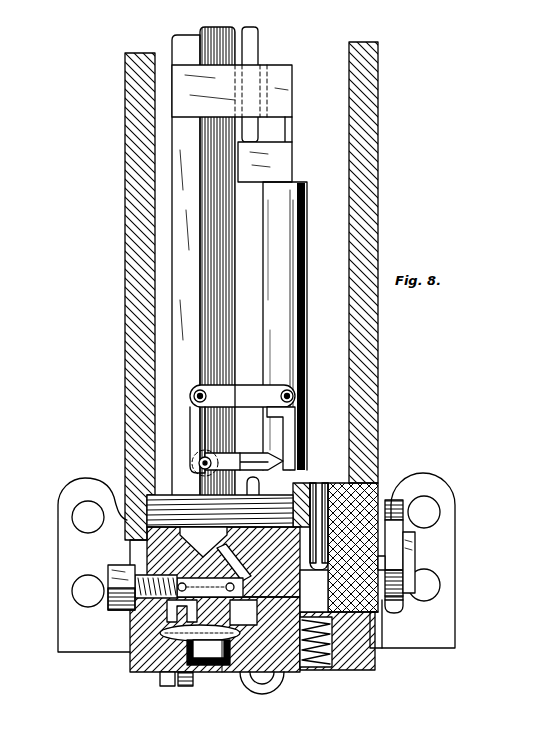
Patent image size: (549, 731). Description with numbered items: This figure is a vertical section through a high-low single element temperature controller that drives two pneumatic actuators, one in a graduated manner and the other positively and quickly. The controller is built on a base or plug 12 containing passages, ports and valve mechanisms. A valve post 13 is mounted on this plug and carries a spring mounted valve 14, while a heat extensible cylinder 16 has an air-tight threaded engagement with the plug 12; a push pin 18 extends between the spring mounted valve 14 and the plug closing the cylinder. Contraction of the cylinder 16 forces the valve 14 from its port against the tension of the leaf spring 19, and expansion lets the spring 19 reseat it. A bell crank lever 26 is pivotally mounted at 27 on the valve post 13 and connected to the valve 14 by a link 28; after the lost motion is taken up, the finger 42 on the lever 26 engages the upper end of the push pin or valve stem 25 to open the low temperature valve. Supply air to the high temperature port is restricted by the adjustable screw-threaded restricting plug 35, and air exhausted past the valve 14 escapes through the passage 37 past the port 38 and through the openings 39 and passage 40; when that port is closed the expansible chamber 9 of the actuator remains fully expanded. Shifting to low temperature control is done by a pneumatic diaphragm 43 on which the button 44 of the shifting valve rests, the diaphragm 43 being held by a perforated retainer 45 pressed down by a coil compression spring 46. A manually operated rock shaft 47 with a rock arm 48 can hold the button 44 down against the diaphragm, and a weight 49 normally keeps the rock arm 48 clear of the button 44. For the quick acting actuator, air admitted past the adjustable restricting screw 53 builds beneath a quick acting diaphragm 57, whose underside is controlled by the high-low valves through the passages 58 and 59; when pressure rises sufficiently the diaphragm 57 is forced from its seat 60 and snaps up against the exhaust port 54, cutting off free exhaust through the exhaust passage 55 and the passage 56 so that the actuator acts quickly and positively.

The expansible chamber 9 is at (247, 587).
The base or plug 12 is at (380, 452).
The valve post 13 is at (227, 312).
The spring mounted valve 14 is at (307, 442).
The heat extensible cylinder 16 is at (372, 372).
The push pin 18 is at (258, 46).
The leaf spring 19 is at (288, 128).
The push pin or valve stem 25 is at (259, 486).
The bell crank lever 26 is at (205, 437).
The pivot 27 is at (205, 460).
The link 28 is at (247, 393).
The adjustable screw-threaded restricting plug 35 is at (108, 567).
The passage 37 is at (322, 483).
The port 38 is at (380, 476).
The openings 39 is at (384, 514).
The passage 40 is at (408, 565).
The finger 42 is at (252, 460).
The pneumatic diaphragm 43 is at (376, 650).
The button 44 is at (348, 673).
The perforated retainer 45 is at (273, 658).
The coil compression spring 46 is at (317, 655).
The manually operated rock shaft 47 is at (404, 557).
The rock arm 48 is at (381, 613).
The weight 49 is at (394, 520).
The adjustable restricting screw 53 is at (182, 685).
The exhaust port 54 is at (187, 637).
The exhaust passage 55 is at (143, 615).
The passage 56 is at (203, 670).
The quick acting diaphragm 57 is at (140, 672).
The passage 58 is at (133, 558).
The passage 59 is at (222, 672).
The seat 60 is at (163, 678).